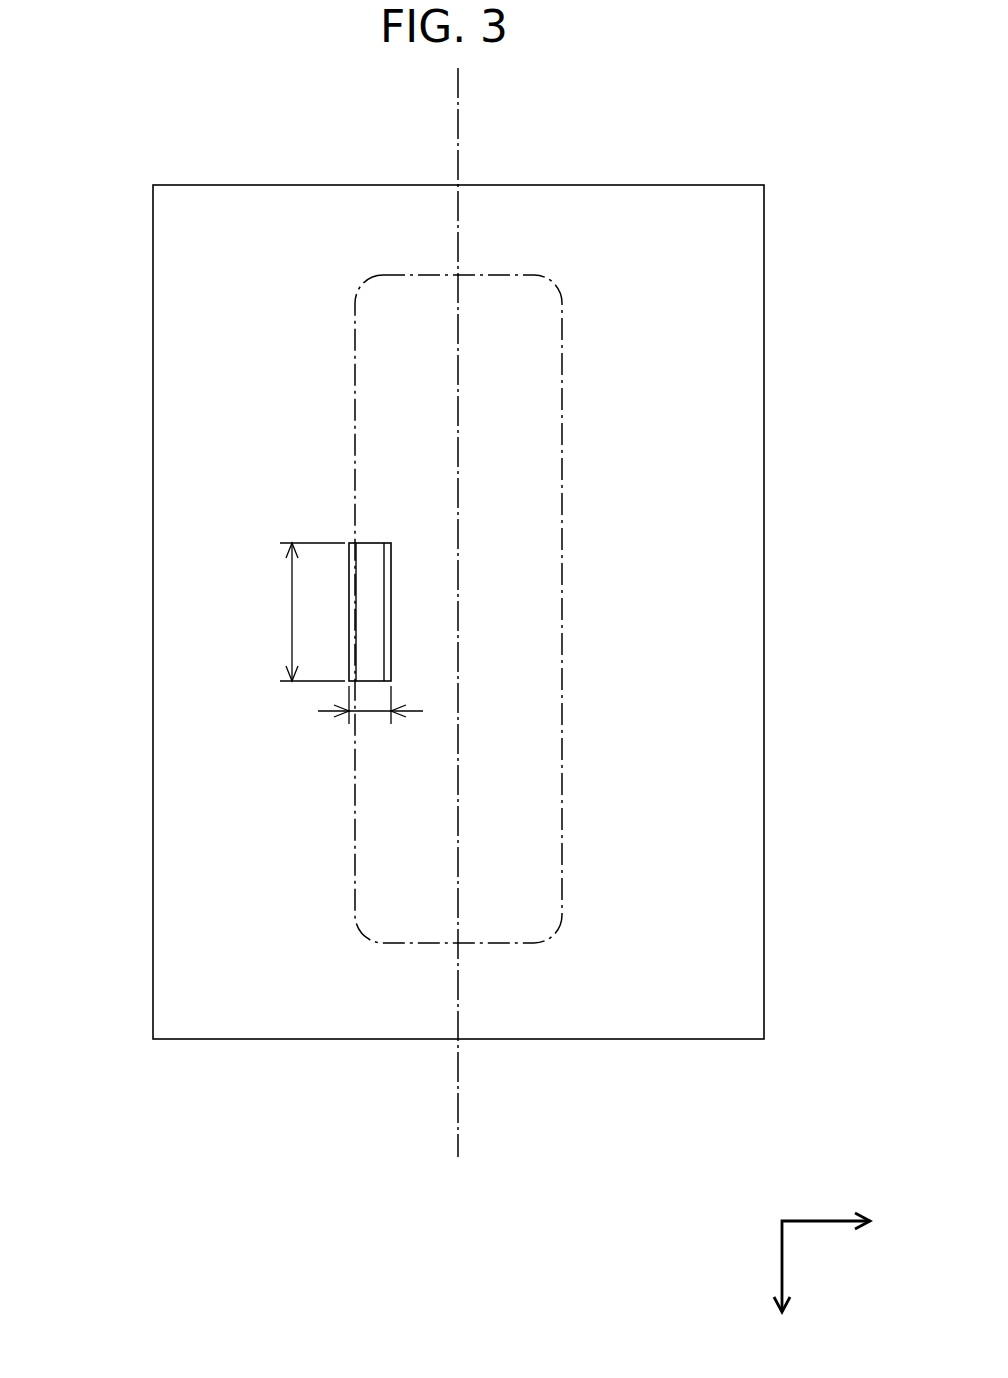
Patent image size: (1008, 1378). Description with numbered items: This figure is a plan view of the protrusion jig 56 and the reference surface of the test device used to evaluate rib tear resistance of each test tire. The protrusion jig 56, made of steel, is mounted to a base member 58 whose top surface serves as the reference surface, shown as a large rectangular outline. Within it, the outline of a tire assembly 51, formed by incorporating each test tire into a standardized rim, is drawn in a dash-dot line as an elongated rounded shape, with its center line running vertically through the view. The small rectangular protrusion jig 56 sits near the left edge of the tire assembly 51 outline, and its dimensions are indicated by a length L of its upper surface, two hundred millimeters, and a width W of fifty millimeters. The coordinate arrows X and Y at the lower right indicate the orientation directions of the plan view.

The tire assembly 51 is at (528, 328).
The protrusion jig 56 is at (342, 528).
The base member 58 is at (215, 1000).
The length of upper surface of protrusion jig L is at (290, 612).
The width of protrusion jig W is at (368, 714).
The X axis direction X is at (781, 1266).
The Y axis direction Y is at (826, 1221).